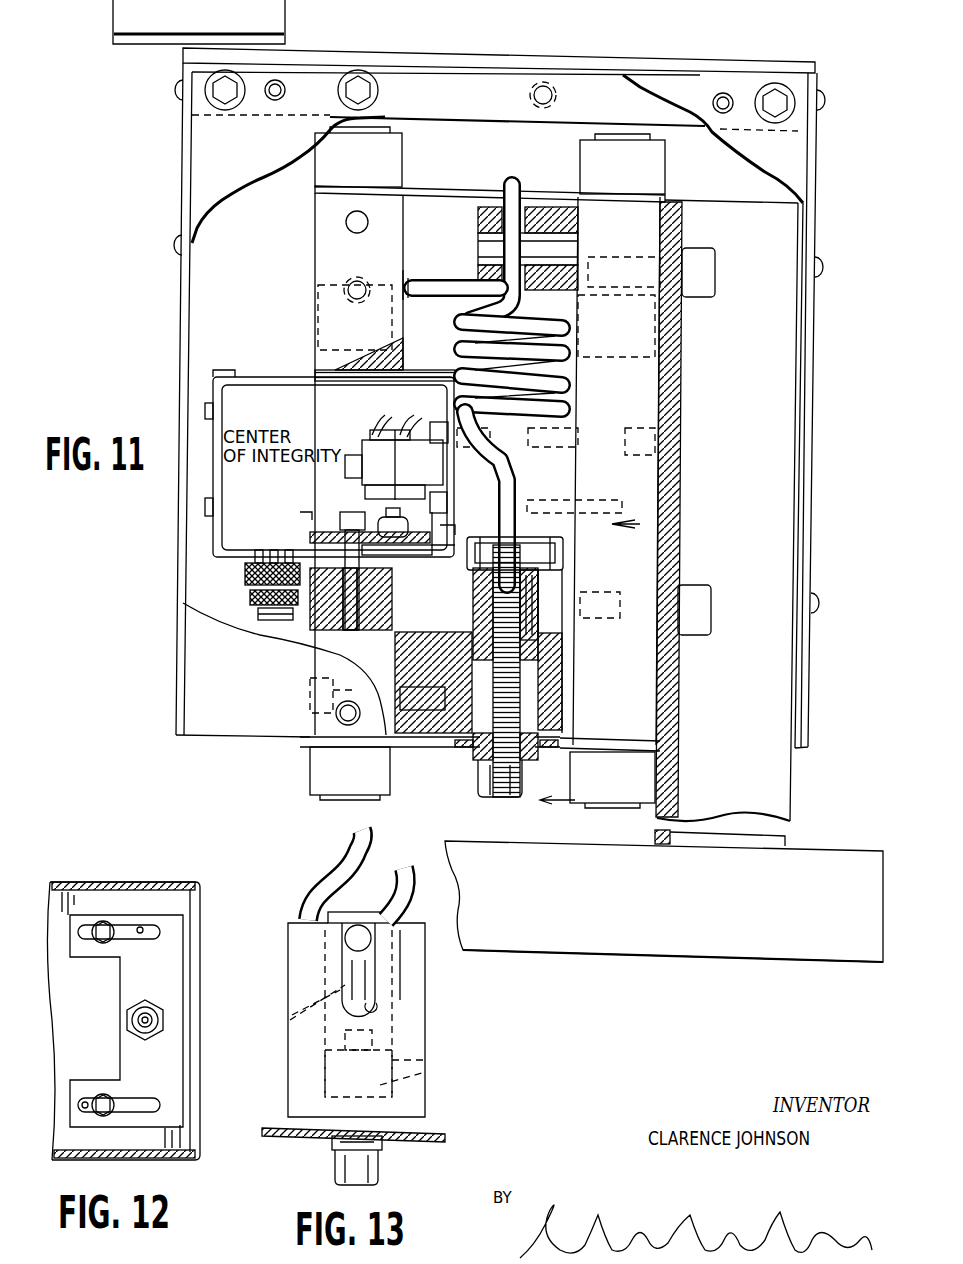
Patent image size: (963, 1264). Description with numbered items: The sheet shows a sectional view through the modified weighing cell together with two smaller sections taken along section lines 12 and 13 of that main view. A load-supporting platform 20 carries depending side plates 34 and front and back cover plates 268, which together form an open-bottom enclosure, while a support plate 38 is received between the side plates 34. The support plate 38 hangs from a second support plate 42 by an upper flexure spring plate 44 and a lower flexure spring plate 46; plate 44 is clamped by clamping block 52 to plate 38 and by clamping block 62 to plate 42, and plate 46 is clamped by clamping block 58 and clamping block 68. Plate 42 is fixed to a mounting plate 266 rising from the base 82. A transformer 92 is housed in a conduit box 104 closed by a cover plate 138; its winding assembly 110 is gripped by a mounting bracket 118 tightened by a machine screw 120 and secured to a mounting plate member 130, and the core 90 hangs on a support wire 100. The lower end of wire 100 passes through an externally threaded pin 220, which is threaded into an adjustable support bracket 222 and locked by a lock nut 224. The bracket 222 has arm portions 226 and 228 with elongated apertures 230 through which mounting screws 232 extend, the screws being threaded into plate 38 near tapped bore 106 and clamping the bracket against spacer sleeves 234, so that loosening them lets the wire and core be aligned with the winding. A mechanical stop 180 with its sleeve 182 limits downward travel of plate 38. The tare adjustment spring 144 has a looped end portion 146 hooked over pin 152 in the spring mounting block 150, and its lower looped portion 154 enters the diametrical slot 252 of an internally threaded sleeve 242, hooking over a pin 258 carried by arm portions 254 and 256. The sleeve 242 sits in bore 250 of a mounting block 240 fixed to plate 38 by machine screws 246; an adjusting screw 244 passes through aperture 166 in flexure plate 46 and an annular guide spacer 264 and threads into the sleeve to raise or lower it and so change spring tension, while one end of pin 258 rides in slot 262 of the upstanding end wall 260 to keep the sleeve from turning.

In FIG. 11, the section line 12— 12 is at (380, 516).
In FIG. 11, the section line 13— 13 is at (590, 667).
In FIG. 11, the load-supporting platform 20 is at (430, 52).
In FIG. 11, the side plates 34 is at (236, 157).
In FIG. 11, the support plate 38 is at (315, 212).
In FIG. 11, the support plate 42 is at (636, 222).
In FIG. 11, the flexure spring plate 44 is at (455, 188).
In FIG. 11, the flexure spring plate 46 is at (560, 745).
In FIG. 13, the flexure spring plate 46 is at (420, 1142).
In FIG. 11, the clamping block 52 is at (368, 165).
In FIG. 11, the clamping block 58 is at (360, 776).
In FIG. 11, the clamping block 62 is at (656, 165).
In FIG. 11, the clamping block 68 is at (626, 783).
In FIG. 11, the base 82 is at (686, 895).
In FIG. 11, the core 90 is at (404, 432).
In FIG. 11, the transformer 92 is at (370, 430).
In FIG. 11, the support wire 100 is at (438, 502).
In FIG. 12, the support wire 100 is at (157, 1008).
In FIG. 11, the conduit box 104 is at (278, 378).
In FIG. 12, the conduit box 104 is at (185, 882).
In FIG. 11, the tapped bore 106 is at (318, 375).
In FIG. 11, the winding assembly 110 is at (362, 445).
In FIG. 11, the mounting bracket 118 is at (436, 425).
In FIG. 11, the machine screw 120 is at (345, 468).
In FIG. 11, the mounting plate member 130 is at (575, 470).
In FIG. 11, the cover plate 138 is at (213, 500).
In FIG. 11, the tare adjustment spring 144 is at (570, 327).
In FIG. 13, the tare adjustment spring 144 is at (352, 838).
In FIG. 11, the looped end portion 146 is at (517, 205).
In FIG. 11, the spring mounting block 150 is at (478, 215).
In FIG. 11, the pin 152 is at (583, 248).
In FIG. 11, the looped portion 154 is at (514, 540).
In FIG. 13, the looped portion 154 is at (305, 888).
In FIG. 11, the aperture 166 is at (525, 760).
In FIG. 11, the mechanical stop 180 is at (420, 272).
In FIG. 11, the sleeve 182 is at (448, 328).
In FIG. 11, the externally threaded pin 220 is at (392, 512).
In FIG. 12, the externally threaded pin 220 is at (140, 1016).
In FIG. 11, the adjustable support bracket 222 is at (432, 556).
In FIG. 12, the adjustable support bracket 222 is at (185, 915).
In FIG. 11, the lock nut 224 is at (400, 555).
In FIG. 12, the lock nut 224 is at (148, 1012).
In FIG. 11, the arm portion 226 is at (310, 535).
In FIG. 12, the arm portion 226 is at (70, 920).
In FIG. 12, the arm portion 228 is at (70, 1085).
In FIG. 12, the elongated apertures 230 is at (140, 926).
In FIG. 11, the mounting screws 232 is at (350, 512).
In FIG. 12, the mounting screws 232 is at (103, 922).
In FIG. 11, the spacer sleeves 234 is at (385, 590).
In FIG. 11, the mounting block 240 is at (430, 733).
In FIG. 13, the mounting block 240 is at (292, 1078).
In FIG. 11, the internally threaded sleeve 242 is at (572, 585).
In FIG. 11, the adjusting screw 244 is at (478, 790).
In FIG. 13, the adjusting screw 244 is at (335, 1170).
In FIG. 11, the machine screws 246 is at (312, 678).
In FIG. 11, the bore 250 is at (545, 680).
In FIG. 13, the bore 250 is at (420, 1064).
In FIG. 11, the diametrical slot 252 is at (493, 615).
In FIG. 13, the diametrical slot 252 is at (292, 1018).
In FIG. 11, the arm portion 254 is at (522, 540).
In FIG. 13, the arm portion 254 is at (321, 948).
In FIG. 11, the arm portion 256 is at (545, 560).
In FIG. 11, the pin 258 is at (560, 545).
In FIG. 13, the pin 258 is at (345, 940).
In FIG. 11, the upstanding end wall 260 is at (590, 606).
In FIG. 13, the upstanding end wall 260 is at (410, 970).
In FIG. 11, the slot 262 is at (556, 622).
In FIG. 13, the slot 262 is at (385, 1000).
In FIG. 11, the annular guide spacer 264 is at (478, 770).
In FIG. 13, the annular guide spacer 264 is at (332, 1145).
In FIG. 11, the mounting plate 266 is at (785, 250).
In FIG. 11, the cover plates 268 is at (181, 285).